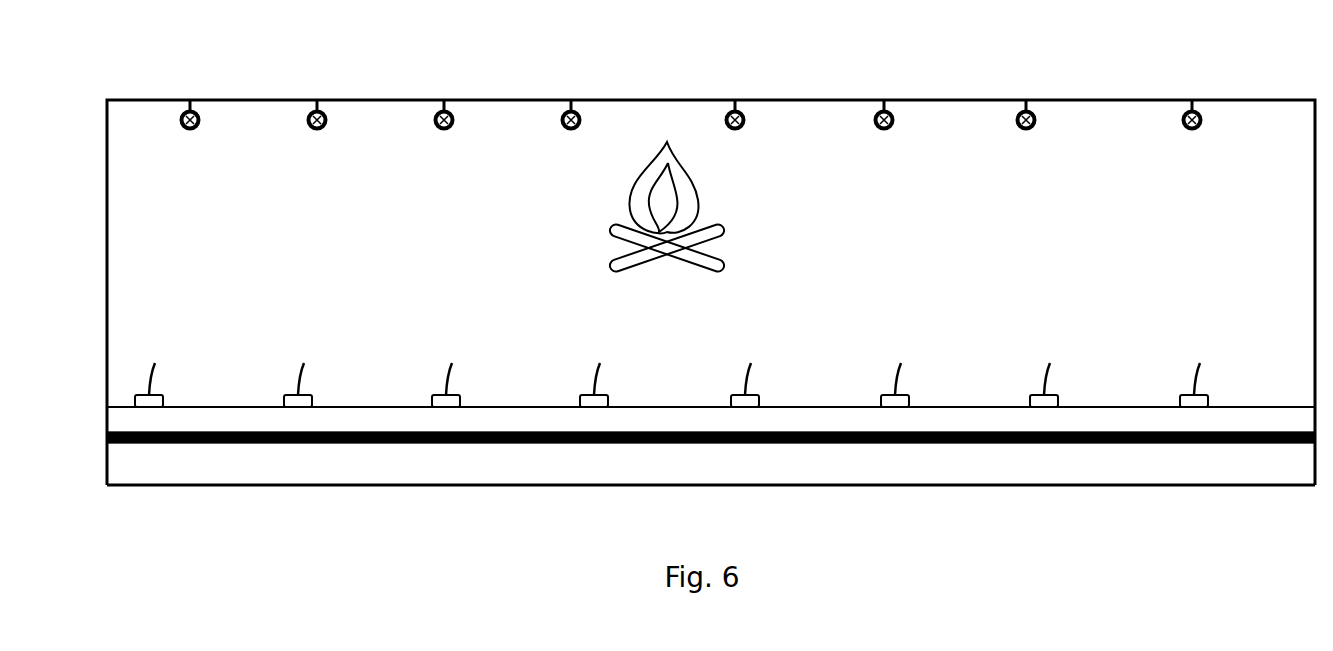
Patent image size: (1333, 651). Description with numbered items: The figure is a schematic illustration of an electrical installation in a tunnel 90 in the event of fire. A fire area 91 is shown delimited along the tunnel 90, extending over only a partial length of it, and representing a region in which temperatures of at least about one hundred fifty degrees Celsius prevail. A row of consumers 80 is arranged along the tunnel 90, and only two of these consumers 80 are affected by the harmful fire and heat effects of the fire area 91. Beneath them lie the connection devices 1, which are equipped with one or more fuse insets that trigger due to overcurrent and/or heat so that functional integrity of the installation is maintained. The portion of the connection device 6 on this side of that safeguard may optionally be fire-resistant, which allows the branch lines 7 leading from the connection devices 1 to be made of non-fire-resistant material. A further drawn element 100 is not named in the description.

The connection device 1 is at (610, 397).
The connection device 6 is at (215, 405).
The branch line 7 is at (900, 373).
The consumer 80 is at (748, 120).
The tunnel 90 is at (452, 485).
The fire area 91 is at (715, 197).
The layer 100 is at (228, 445).